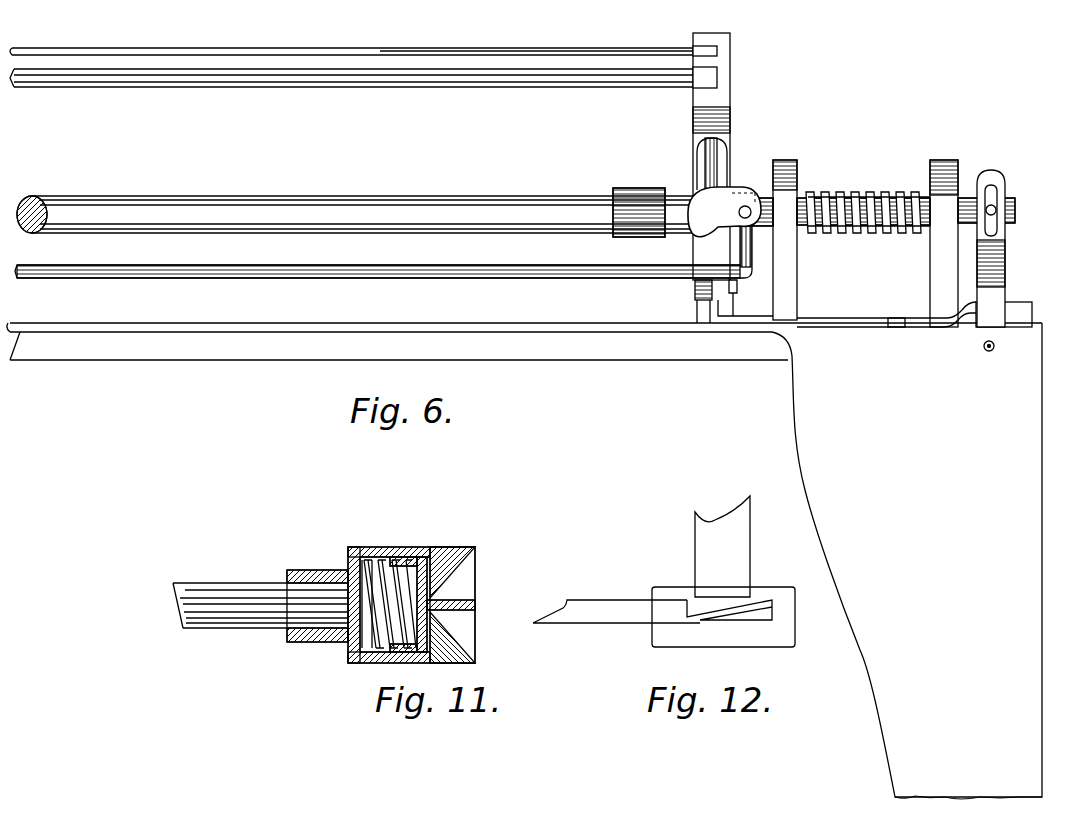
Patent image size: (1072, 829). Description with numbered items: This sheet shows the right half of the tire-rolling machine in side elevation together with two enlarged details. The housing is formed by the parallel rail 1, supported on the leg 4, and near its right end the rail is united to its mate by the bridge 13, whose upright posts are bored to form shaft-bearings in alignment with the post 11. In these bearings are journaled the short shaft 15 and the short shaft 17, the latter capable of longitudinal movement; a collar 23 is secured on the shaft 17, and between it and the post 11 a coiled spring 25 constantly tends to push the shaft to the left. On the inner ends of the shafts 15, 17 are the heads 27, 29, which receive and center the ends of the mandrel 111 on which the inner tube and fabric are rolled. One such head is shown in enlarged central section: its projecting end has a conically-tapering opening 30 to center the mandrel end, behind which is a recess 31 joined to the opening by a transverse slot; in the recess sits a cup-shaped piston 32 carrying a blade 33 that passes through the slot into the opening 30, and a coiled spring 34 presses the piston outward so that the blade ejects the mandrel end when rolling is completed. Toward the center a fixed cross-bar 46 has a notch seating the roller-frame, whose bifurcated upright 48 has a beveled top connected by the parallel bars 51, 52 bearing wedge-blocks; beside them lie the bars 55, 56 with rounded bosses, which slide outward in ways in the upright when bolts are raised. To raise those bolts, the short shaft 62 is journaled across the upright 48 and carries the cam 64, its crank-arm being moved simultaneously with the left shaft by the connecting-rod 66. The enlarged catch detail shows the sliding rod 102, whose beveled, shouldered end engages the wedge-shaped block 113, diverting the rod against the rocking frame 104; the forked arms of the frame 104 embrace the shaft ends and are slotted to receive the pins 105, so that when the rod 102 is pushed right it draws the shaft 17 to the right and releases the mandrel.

In FIG. 6, the rail 1 is at (524, 353).
In FIG. 6, the leg 4 is at (907, 561).
In FIG. 6, the post 11 is at (944, 232).
In FIG. 6, the bridge 13 is at (796, 240).
In FIG. 11, the short shaft 15 is at (260, 616).
In FIG. 6, the short shaft 17 is at (1016, 210).
In FIG. 6, the collar 23 is at (807, 187).
In FIG. 6, the coiled spring 25 is at (892, 232).
In FIG. 11, the head 27 is at (390, 589).
In FIG. 6, the head 29 is at (639, 203).
In FIG. 11, the conically-tapering opening 30 is at (470, 573).
In FIG. 11, the recess 31 is at (365, 557).
In FIG. 11, the cup-shaped piston 32 is at (421, 555).
In FIG. 11, the blade 33 is at (476, 605).
In FIG. 11, the coiled spring 34 is at (364, 661).
In FIG. 6, the fixed cross-bar 46 is at (721, 301).
In FIG. 6, the bifurcated upright 48 is at (724, 156).
In FIG. 6, the parallel bar 51 is at (395, 45).
In FIG. 6, the parallel bar 52 is at (432, 69).
In FIG. 6, the bar 55 is at (368, 45).
In FIG. 6, the bar 56 is at (449, 87).
In FIG. 6, the short shaft 62 is at (751, 198).
In FIG. 6, the cam 64 is at (724, 212).
In FIG. 6, the connecting-rod 66 is at (383, 246).
In FIG. 6, the sliding rod 102 is at (846, 327).
In FIG. 12, the sliding rod 102 is at (618, 600).
In FIG. 6, the rocking frame 104 is at (1015, 176).
In FIG. 12, the rocking frame 104 is at (739, 546).
In FIG. 6, the pin 105 is at (996, 215).
In FIG. 6, the mandrel 111 is at (355, 204).
In FIG. 6, the wedge-shaped block 113 is at (1032, 315).
In FIG. 12, the wedge-shaped block 113 is at (748, 614).